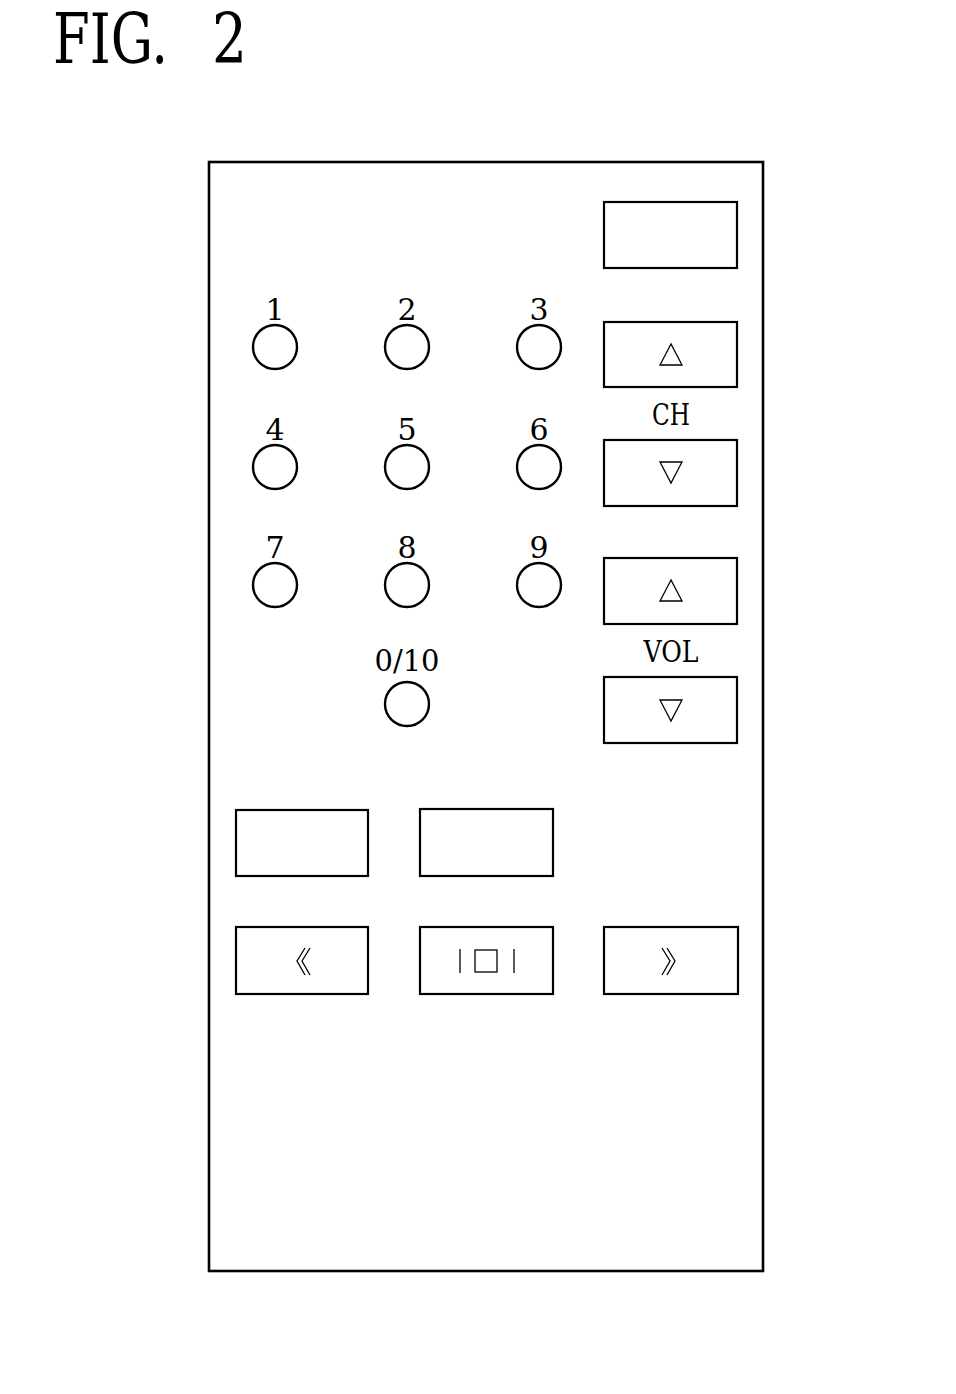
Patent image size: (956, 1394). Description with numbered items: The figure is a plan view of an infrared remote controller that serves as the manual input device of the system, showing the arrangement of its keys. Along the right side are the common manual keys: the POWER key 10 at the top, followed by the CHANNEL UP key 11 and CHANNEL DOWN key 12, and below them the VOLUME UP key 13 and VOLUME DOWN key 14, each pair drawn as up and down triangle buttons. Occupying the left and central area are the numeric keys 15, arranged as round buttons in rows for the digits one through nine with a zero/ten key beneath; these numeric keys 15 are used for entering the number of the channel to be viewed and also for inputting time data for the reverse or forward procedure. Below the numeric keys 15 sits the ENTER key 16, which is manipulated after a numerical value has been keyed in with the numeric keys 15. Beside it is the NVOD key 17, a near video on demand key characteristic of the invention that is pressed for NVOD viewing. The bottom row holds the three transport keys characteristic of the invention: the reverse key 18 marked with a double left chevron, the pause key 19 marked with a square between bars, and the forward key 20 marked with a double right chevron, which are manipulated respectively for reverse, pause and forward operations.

The POWER key 10 is at (737, 228).
The CHANNEL UP key 11 is at (737, 347).
The CHANNEL DOWN key 12 is at (737, 466).
The VOLUME UP key 13 is at (737, 584).
The VOLUME DOWN key 14 is at (737, 703).
The numeric keys 15 is at (278, 222).
The ENTER key 16 is at (433, 808).
The NVOD key 17 is at (248, 808).
The reverse key 18 is at (236, 952).
The pause key 19 is at (540, 927).
The forward key 20 is at (725, 927).